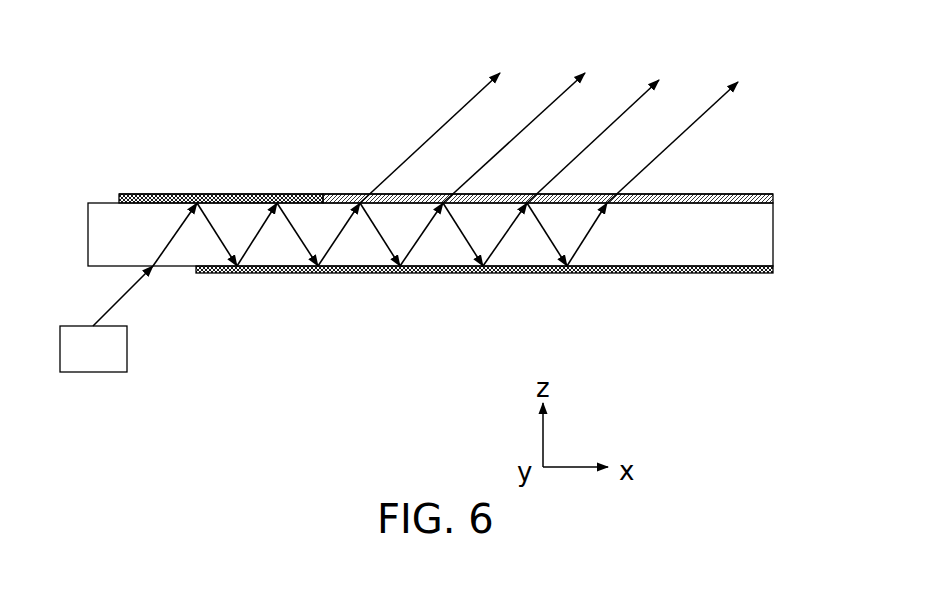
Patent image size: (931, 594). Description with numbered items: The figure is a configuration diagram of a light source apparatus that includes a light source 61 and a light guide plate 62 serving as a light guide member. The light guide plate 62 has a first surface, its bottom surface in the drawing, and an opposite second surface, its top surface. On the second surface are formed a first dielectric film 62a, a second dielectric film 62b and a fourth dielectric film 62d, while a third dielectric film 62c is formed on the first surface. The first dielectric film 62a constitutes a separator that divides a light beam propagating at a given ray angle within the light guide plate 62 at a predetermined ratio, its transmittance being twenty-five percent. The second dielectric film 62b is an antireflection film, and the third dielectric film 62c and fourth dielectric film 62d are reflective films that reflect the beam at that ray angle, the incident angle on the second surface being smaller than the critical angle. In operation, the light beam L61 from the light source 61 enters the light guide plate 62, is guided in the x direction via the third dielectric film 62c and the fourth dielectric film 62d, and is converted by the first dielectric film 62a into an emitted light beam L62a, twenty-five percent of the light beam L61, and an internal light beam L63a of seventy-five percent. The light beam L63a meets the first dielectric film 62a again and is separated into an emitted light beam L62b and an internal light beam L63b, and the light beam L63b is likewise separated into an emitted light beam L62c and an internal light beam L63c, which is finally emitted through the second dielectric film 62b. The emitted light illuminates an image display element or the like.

The light source 61 is at (113, 372).
The light guide plate 62 is at (88, 250).
The first dielectric film 62a is at (343, 194).
The second dielectric film 62b is at (725, 194).
The third dielectric film 62c is at (730, 273).
The fourth dielectric film 62d is at (197, 194).
The light beam L61 is at (133, 290).
The light beam L62a is at (450, 124).
The light beam L62b is at (615, 124).
The light beam L62c is at (616, 124).
The light beam L63a is at (387, 243).
The light beam L63b is at (477, 243).
The light beam L63c is at (557, 243).